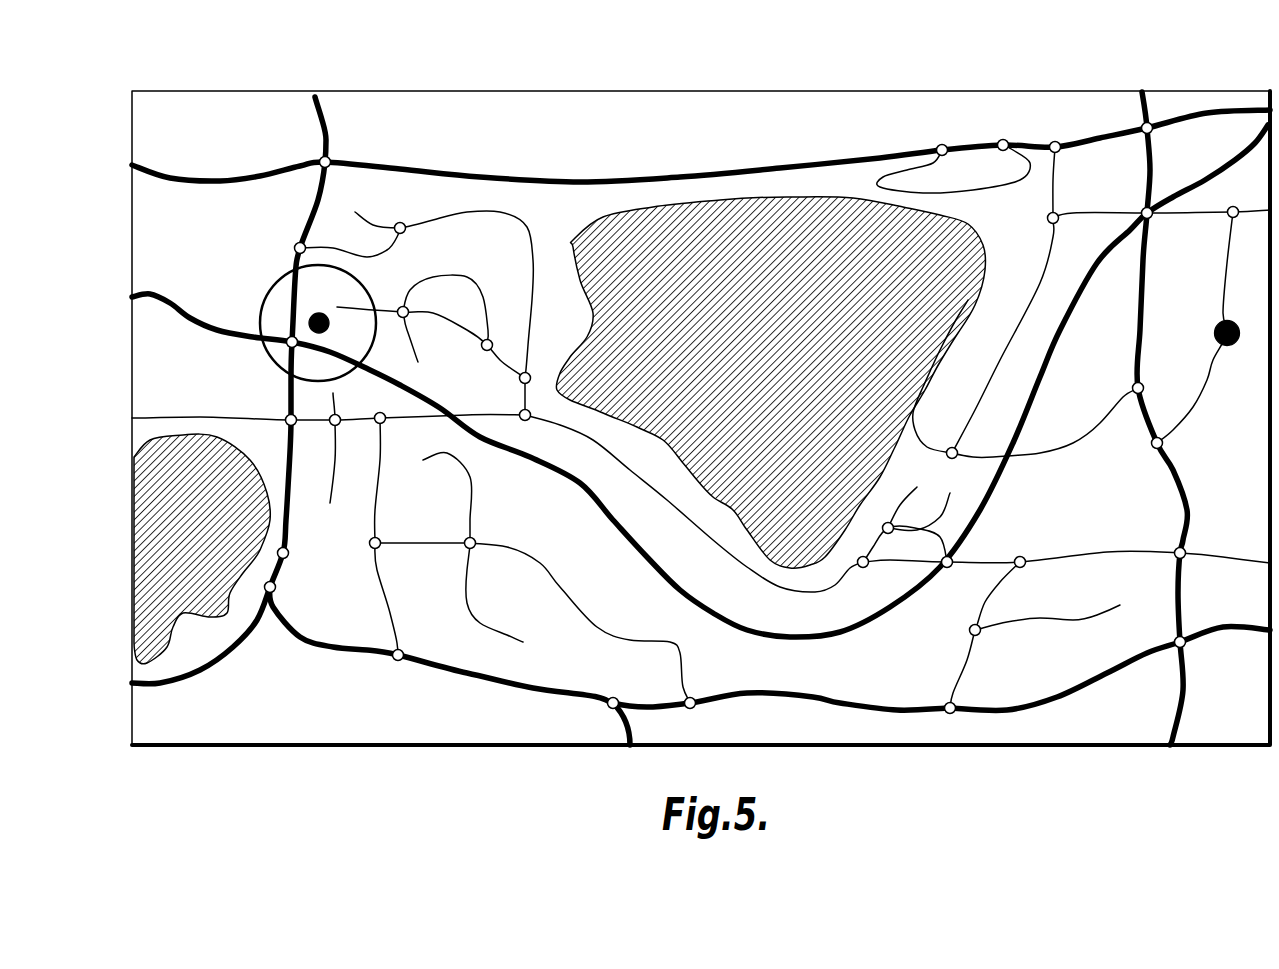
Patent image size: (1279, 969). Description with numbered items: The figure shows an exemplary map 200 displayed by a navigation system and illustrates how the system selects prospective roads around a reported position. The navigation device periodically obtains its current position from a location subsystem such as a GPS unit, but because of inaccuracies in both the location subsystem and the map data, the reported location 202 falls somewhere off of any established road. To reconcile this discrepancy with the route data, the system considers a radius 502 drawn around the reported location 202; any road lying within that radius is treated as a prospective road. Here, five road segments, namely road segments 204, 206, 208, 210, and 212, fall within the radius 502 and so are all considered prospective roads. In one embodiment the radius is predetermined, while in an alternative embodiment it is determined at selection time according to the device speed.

The map 200 is at (842, 91).
The reported location 202 is at (319, 313).
The road segment 204 is at (362, 300).
The road segment 206 is at (289, 309).
The road segment 208 is at (255, 342).
The road segment 210 is at (279, 380).
The road segment 212 is at (348, 378).
The radius 502 is at (288, 306).